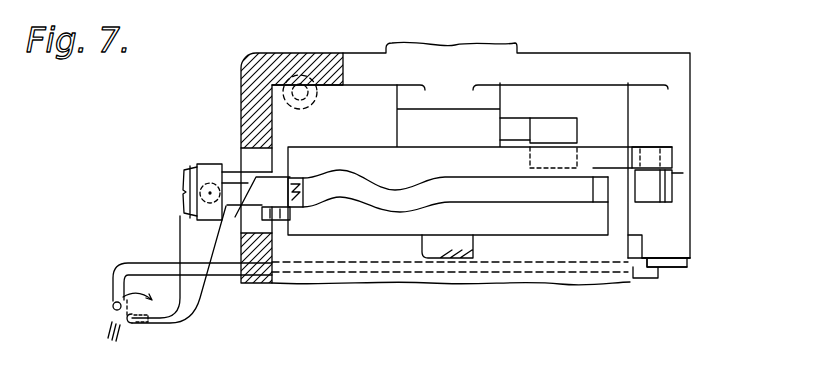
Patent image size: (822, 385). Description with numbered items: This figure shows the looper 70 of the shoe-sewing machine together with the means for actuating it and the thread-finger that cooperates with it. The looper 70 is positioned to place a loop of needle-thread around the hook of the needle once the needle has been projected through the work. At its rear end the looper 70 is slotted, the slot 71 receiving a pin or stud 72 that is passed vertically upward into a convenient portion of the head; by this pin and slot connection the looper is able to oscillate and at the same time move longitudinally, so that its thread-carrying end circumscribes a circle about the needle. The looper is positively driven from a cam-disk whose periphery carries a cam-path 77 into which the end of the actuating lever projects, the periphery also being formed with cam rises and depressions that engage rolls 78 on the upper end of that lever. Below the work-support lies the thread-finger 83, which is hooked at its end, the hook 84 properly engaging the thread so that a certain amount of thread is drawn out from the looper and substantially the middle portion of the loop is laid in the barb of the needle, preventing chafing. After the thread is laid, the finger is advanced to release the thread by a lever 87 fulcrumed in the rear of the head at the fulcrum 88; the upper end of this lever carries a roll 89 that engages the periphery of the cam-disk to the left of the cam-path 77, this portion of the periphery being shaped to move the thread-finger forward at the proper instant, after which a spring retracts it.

The looper 70 is at (140, 324).
The slot 71 is at (269, 52).
The pin or stud 72 is at (233, 200).
The cam-path 77 is at (446, 190).
The rolls 78 is at (304, 181).
The thread-finger 83 is at (228, 268).
The hook 84 is at (112, 305).
The lever 87 is at (660, 192).
The fulcrum 88 is at (676, 250).
The roll 89 is at (668, 154).